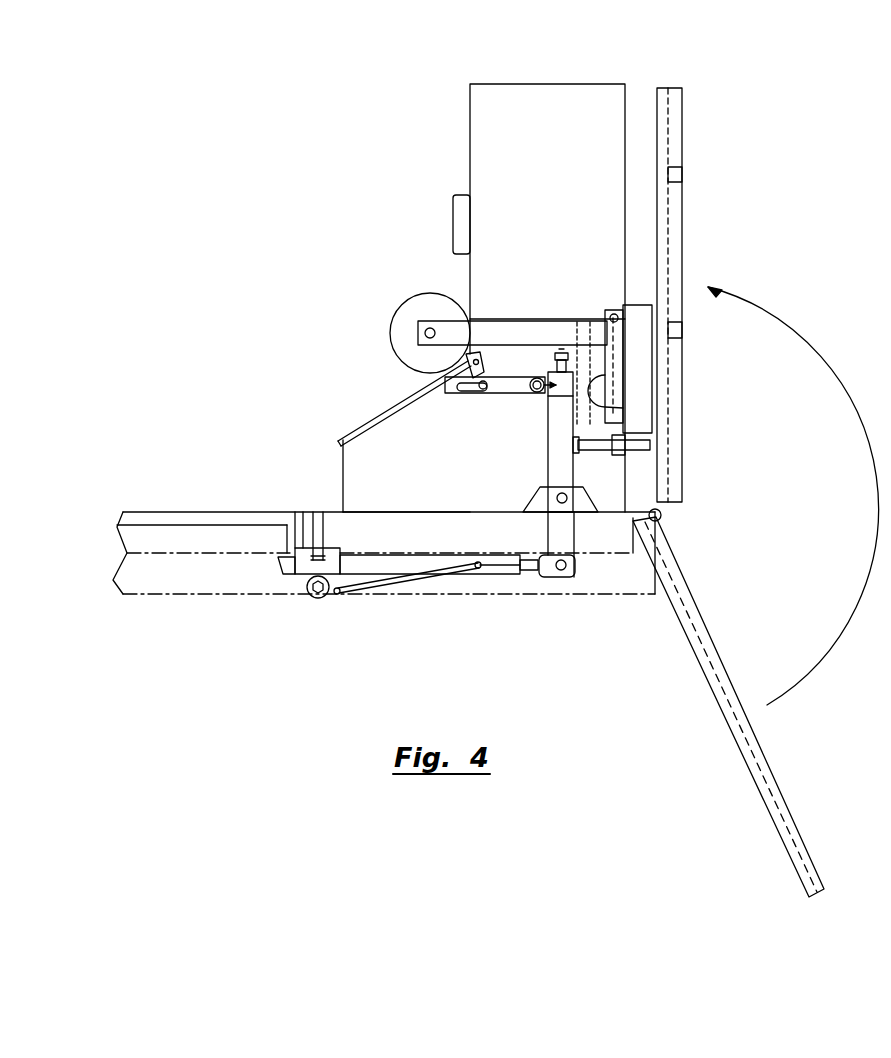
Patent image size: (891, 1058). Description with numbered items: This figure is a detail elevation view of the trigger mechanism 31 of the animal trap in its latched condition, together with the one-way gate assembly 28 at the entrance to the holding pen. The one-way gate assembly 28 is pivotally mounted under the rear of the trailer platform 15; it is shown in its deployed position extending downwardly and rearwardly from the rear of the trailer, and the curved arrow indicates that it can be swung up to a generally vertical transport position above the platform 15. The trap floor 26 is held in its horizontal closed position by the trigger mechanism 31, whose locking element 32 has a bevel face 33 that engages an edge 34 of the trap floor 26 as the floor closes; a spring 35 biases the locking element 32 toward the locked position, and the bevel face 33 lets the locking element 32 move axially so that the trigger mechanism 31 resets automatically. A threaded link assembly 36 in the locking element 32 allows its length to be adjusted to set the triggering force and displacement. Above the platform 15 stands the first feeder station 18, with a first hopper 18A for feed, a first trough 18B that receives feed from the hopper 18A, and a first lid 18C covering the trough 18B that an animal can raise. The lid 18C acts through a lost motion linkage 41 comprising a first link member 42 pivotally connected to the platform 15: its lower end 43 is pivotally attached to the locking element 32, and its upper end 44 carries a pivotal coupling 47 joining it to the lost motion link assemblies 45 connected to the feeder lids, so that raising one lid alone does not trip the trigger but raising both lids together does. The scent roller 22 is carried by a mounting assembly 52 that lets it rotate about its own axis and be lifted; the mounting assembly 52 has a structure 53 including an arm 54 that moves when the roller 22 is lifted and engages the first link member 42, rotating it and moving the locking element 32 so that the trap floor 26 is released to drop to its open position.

The trailer platform 15 is at (330, 512).
The first feeder station 18 is at (430, 435).
The first hopper 18A is at (492, 180).
The first trough 18B is at (393, 435).
The first lid 18C is at (348, 427).
The scent roller 22 is at (407, 316).
The trap floor 26 is at (140, 512).
The one-way gate assembly 28 is at (702, 662).
The trigger mechanism 31 is at (493, 567).
The locking element 32 is at (367, 565).
The bevel face 33 is at (283, 565).
The edge 34 is at (285, 540).
The spring 35 is at (417, 572).
The threaded link assembly 36 is at (528, 572).
The lost motion linkage 41 is at (553, 420).
The first link member 42 is at (557, 475).
The lower end 43 is at (568, 540).
The upper end 44 is at (552, 360).
The lost motion link assemblies 45 is at (498, 390).
The pivotal coupling 47 is at (575, 376).
The mounting assembly 52 is at (492, 328).
The structure 53 is at (600, 375).
The arm 54 is at (607, 410).